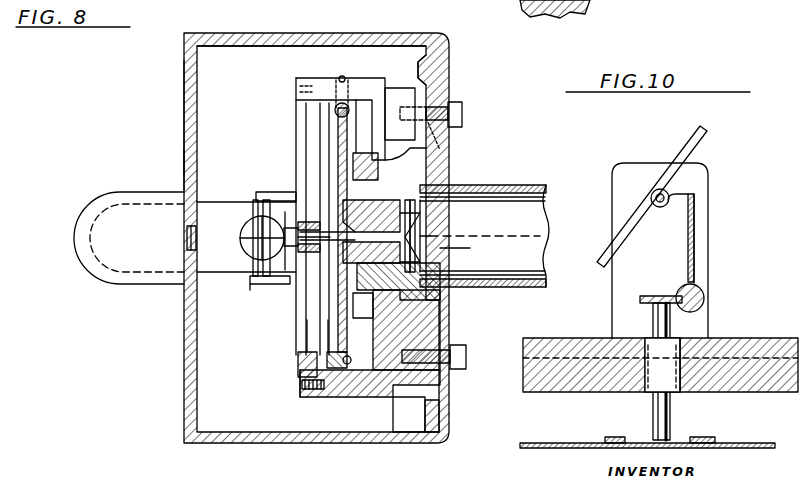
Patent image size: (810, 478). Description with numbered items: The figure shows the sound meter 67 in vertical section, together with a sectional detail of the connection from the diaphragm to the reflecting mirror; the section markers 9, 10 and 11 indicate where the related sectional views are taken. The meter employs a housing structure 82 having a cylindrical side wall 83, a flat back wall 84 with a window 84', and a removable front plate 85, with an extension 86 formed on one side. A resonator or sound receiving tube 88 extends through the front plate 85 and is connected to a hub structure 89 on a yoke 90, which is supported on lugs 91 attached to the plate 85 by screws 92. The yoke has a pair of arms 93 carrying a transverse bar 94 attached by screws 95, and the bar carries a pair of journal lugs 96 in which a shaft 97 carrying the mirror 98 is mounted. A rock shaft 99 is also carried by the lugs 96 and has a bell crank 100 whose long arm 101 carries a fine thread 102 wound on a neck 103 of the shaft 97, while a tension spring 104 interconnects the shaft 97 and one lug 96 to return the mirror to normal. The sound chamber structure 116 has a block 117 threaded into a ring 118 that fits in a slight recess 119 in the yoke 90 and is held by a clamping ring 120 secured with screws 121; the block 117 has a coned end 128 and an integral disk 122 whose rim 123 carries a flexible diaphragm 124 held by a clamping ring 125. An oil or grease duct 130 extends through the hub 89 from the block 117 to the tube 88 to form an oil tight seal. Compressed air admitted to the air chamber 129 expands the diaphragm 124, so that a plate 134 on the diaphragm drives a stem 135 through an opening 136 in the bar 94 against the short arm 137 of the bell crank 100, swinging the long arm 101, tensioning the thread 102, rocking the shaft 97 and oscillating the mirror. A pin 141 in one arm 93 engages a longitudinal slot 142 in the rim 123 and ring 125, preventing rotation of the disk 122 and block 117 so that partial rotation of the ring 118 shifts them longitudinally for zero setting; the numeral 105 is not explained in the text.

In FIG. 8, the housing structure 82 is at (338, 33).
In FIG. 8, the cylindrical side wall 83 is at (255, 34).
In FIG. 8, the flat back wall 84 is at (161, 125).
In FIG. 8, the window 84' is at (175, 238).
In FIG. 8, the removable front plate 85 is at (440, 72).
In FIG. 8, the extension 86 is at (130, 284).
In FIG. 8, the sound meter 67 is at (182, 162).
In FIG. 8, the resonator or sound receiving tube 88 is at (535, 186).
In FIG. 8, the hub structure 89 is at (440, 306).
In FIG. 8, the yoke 90 is at (403, 410).
In FIG. 8, the lugs 91 is at (445, 378).
In FIG. 8, the screws 92 is at (455, 112).
In FIG. 8, the arms 93 is at (372, 397).
In FIG. 8, the transverse bar 94 is at (296, 126).
In FIG. 10, the transverse bar 94 is at (783, 338).
In FIG. 8, the screws 95 is at (302, 386).
In FIG. 8, the journal lugs 96 is at (257, 194).
In FIG. 10, the journal lugs 96 is at (612, 262).
In FIG. 8, the shaft 97 is at (256, 280).
In FIG. 10, the shaft 97 is at (662, 208).
In FIG. 8, the mirror 98 is at (266, 254).
In FIG. 10, the mirror 98 is at (707, 132).
In FIG. 8, the rock shaft 99 is at (278, 280).
In FIG. 10, the rock shaft 99 is at (705, 298).
In FIG. 8, the bell crank 100 is at (271, 270).
In FIG. 10, the bell crank 100 is at (700, 262).
In FIG. 10, the long arm 101 is at (698, 222).
In FIG. 10, the fine thread 102 is at (700, 200).
In FIG. 8, the neck 103 is at (256, 240).
In FIG. 8, the tension spring 104 is at (265, 284).
In FIG. 8, the nozzle 105 is at (445, 248).
In FIG. 8, the sound chamber structure 116 is at (352, 118).
In FIG. 8, the block 117 is at (430, 224).
In FIG. 8, the ring 118 is at (478, 264).
In FIG. 8, the recess 119 is at (430, 322).
In FIG. 8, the clamping ring 120 is at (353, 162).
In FIG. 8, the screws 121 is at (445, 150).
In FIG. 8, the disk 122 is at (338, 145).
In FIG. 8, the rim 123 is at (342, 397).
In FIG. 8, the flexible diaphragm 124 is at (330, 338).
In FIG. 10, the flexible diaphragm 124 is at (582, 450).
In FIG. 8, the clamping ring 125 is at (302, 362).
In FIG. 8, the coned end 128 is at (270, 212).
In FIG. 8, the air chamber 129 is at (340, 308).
In FIG. 8, the oil or grease duct 130 is at (438, 158).
In FIG. 10, the plate 134 is at (700, 438).
In FIG. 10, the stem 135 is at (653, 405).
In FIG. 10, the opening 136 is at (675, 346).
In FIG. 10, the short arm 137 is at (648, 296).
In FIG. 8, the pin 141 is at (347, 80).
In FIG. 8, the longitudinal slot 142 is at (312, 84).
In FIG. 8, the section line 9- 9 is at (370, 248).
In FIG. 8, the section line 10- 10 is at (232, 238).
In FIG. 10, the section line 11- 11 is at (700, 195).